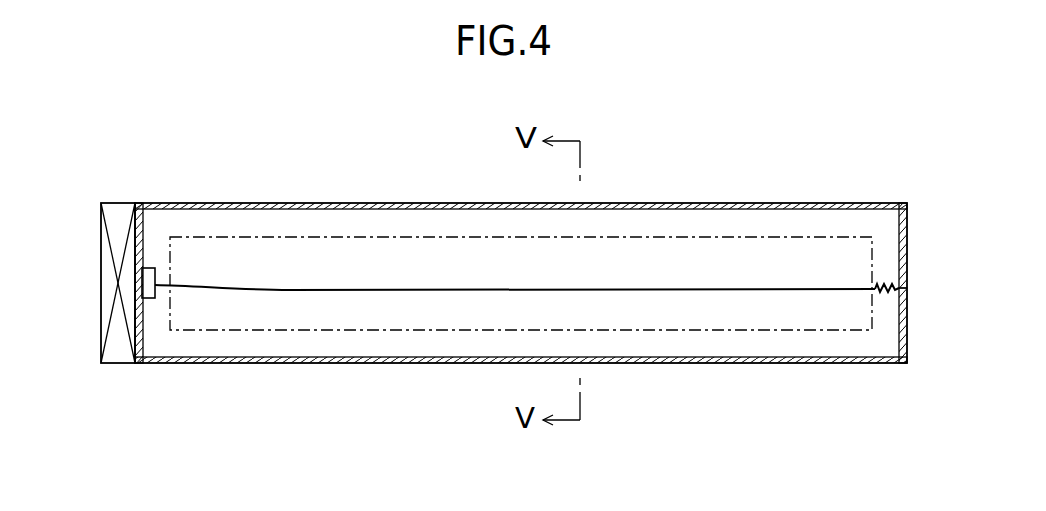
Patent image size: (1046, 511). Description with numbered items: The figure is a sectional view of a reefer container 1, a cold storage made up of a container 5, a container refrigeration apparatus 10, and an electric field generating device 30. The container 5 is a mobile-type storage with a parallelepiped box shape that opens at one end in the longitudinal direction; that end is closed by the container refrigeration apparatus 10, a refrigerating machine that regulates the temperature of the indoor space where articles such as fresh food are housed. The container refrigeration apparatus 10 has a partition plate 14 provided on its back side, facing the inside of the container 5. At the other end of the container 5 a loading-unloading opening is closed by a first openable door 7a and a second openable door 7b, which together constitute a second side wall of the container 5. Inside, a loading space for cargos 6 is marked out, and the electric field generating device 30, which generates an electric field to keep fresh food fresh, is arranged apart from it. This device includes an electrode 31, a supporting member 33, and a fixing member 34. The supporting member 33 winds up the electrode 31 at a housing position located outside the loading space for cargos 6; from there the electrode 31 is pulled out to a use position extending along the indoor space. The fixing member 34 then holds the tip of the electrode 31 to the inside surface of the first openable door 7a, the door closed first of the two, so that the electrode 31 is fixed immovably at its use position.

The reefer container 1 is at (823, 171).
The container 5 is at (462, 203).
The loading space for cargos 6 is at (677, 237).
The first openable door 7a is at (908, 322).
The second openable door 7b is at (908, 258).
The container refrigeration apparatus 10 is at (101, 283).
The partition plate 14 is at (144, 337).
The electric field generating device 30 is at (515, 269).
The electrode 31 is at (430, 290).
The supporting member 33 is at (150, 268).
The fixing member 34 is at (880, 283).